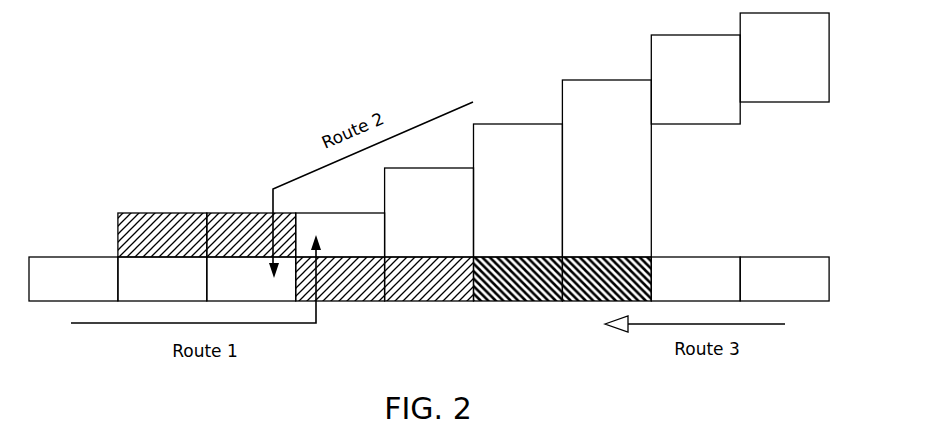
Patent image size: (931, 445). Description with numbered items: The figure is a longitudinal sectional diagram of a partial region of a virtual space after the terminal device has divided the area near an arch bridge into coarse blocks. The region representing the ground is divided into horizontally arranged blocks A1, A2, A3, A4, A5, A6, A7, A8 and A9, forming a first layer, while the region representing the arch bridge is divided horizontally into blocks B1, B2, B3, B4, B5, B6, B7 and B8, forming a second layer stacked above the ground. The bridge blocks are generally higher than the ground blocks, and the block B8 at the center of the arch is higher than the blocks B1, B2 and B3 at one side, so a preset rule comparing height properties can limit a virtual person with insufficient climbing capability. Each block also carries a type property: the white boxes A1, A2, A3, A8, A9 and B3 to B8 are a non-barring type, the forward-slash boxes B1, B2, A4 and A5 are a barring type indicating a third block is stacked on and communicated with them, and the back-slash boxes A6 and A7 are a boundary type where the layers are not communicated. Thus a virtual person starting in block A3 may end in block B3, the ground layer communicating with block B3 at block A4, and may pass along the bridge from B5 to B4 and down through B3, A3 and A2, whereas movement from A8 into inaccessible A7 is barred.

The ground block A1 is at (73, 279).
The ground block A2 is at (162, 279).
The ground block A3 is at (251, 279).
The ground block A4 is at (340, 279).
The ground block A5 is at (429, 279).
The ground block A6 is at (518, 279).
The ground block A7 is at (606, 279).
The ground block A8 is at (695, 279).
The ground block A9 is at (784, 279).
The arch bridge block B1 is at (162, 235).
The arch bridge block B2 is at (251, 235).
The arch bridge block B3 is at (340, 235).
The arch bridge block B4 is at (429, 212).
The arch bridge block B5 is at (518, 190).
The arch bridge block B6 is at (606, 168).
The arch bridge block B7 is at (695, 79).
The arch bridge block B8 is at (784, 57).